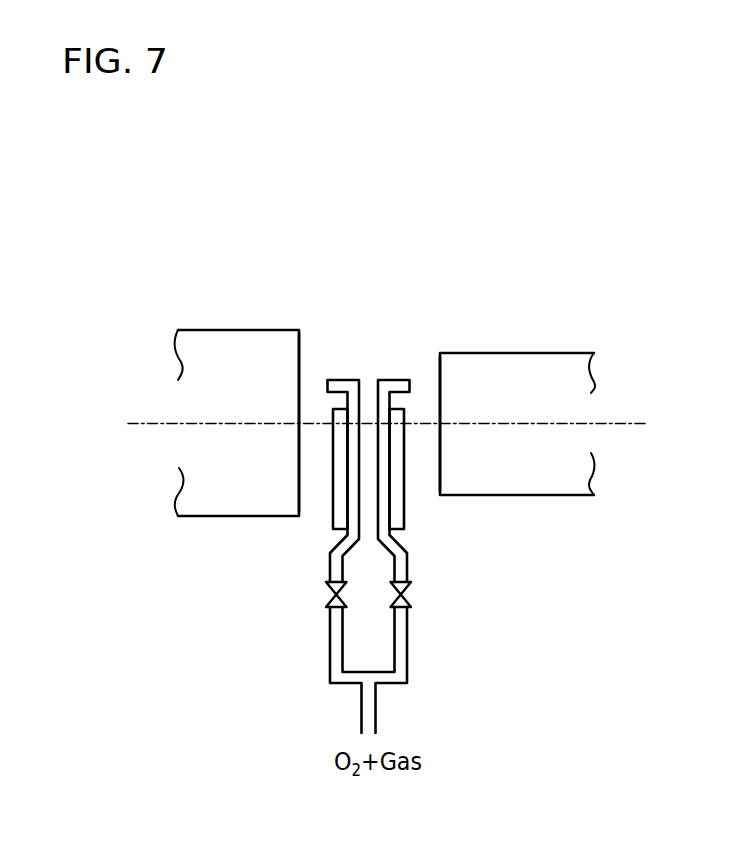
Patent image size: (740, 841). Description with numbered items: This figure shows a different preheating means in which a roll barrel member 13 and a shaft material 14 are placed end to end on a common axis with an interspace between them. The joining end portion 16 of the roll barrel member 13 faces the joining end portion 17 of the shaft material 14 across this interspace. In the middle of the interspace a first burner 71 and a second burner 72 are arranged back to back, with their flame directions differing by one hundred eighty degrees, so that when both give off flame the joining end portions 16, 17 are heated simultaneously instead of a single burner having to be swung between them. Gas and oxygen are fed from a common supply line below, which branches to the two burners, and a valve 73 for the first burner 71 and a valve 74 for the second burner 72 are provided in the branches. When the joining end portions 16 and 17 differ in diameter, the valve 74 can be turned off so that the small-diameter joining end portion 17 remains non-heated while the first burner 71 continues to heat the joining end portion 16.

The roll barrel member 13 is at (237, 325).
The shaft material 14 is at (548, 353).
The joining end portion 16 is at (300, 367).
The joining end portion 17 is at (440, 380).
The first burner 71 is at (342, 385).
The second burner 72 is at (393, 385).
The valve 73 is at (328, 602).
The valve 74 is at (410, 602).